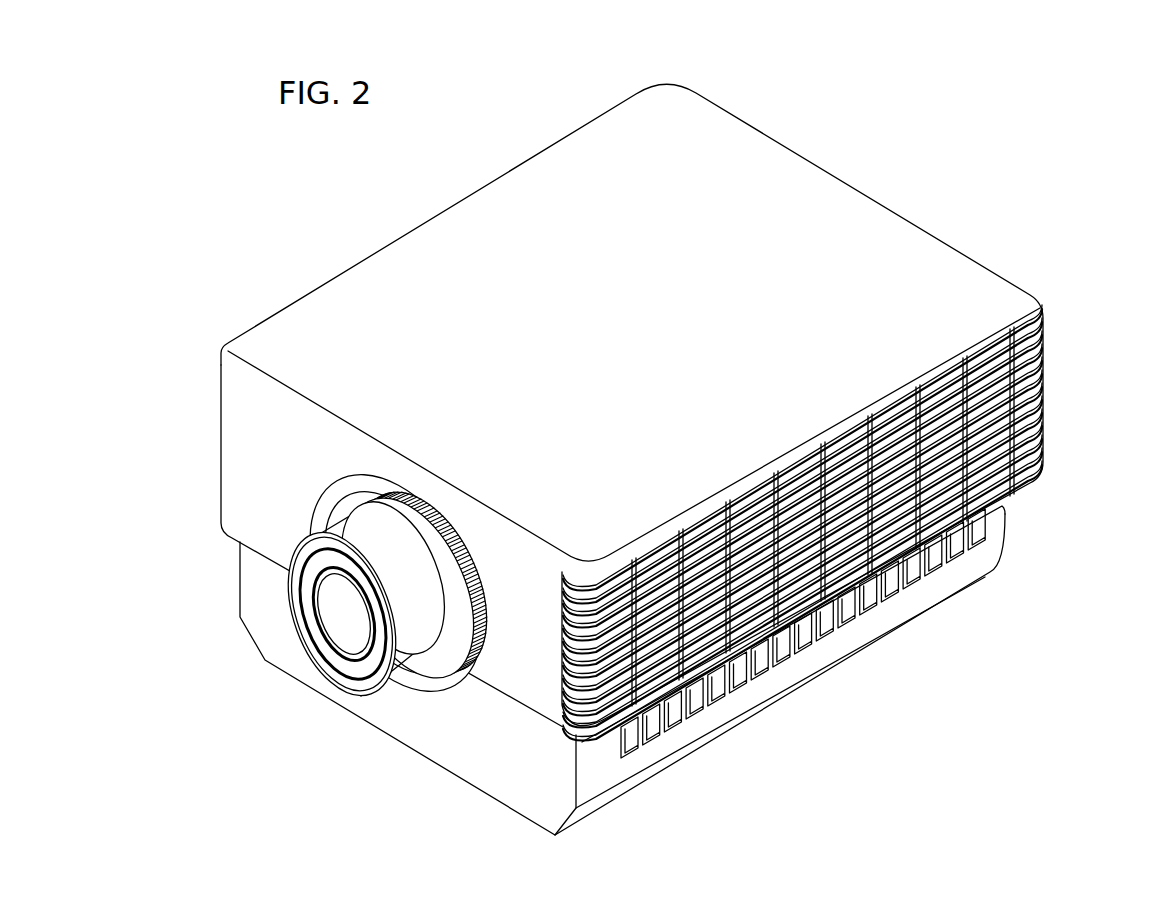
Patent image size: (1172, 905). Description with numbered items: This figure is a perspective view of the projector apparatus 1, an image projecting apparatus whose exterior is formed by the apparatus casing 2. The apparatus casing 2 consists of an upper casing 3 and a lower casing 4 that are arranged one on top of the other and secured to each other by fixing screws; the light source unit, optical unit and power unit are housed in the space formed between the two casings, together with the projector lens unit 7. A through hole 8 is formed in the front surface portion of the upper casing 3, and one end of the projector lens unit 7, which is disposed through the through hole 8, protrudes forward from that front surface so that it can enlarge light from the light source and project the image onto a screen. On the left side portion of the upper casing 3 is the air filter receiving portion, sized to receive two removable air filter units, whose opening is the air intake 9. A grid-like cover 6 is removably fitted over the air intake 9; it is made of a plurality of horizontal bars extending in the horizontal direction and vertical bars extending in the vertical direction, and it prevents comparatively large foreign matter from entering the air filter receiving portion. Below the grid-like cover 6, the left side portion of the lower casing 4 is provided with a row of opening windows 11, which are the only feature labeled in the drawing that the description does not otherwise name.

The projector apparatus 1 is at (318, 200).
The apparatus casing 2 is at (184, 491).
The upper casing 3 is at (221, 506).
The lower casing 4 is at (248, 566).
The grid-like cover 6 is at (1045, 390).
The projector lens unit 7 is at (301, 648).
The through hole 8 is at (458, 672).
The air intake 9 is at (987, 462).
The intake slot 11 is at (877, 597).